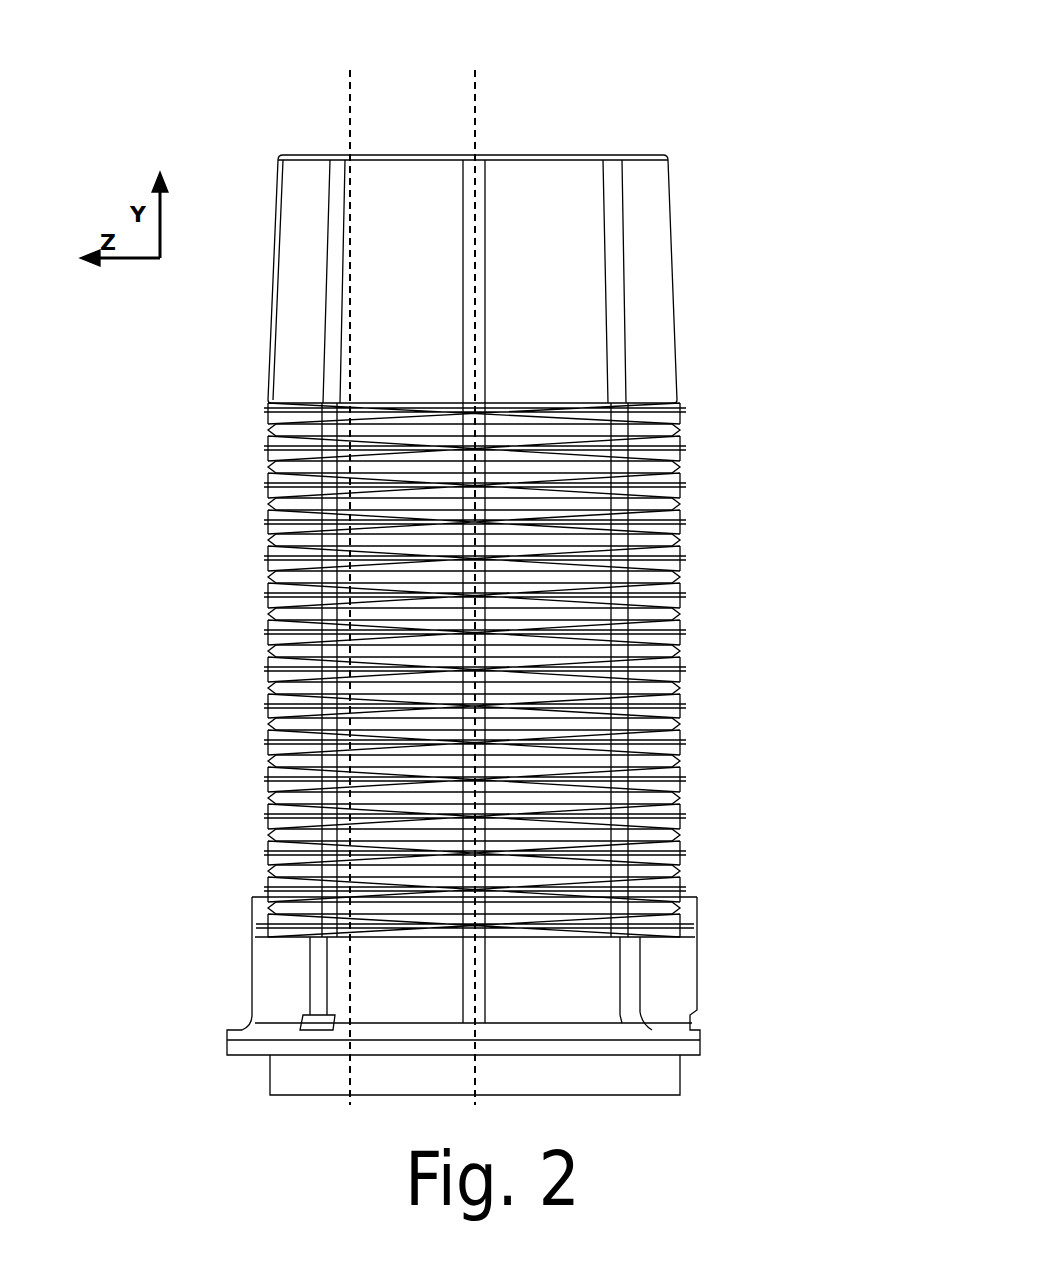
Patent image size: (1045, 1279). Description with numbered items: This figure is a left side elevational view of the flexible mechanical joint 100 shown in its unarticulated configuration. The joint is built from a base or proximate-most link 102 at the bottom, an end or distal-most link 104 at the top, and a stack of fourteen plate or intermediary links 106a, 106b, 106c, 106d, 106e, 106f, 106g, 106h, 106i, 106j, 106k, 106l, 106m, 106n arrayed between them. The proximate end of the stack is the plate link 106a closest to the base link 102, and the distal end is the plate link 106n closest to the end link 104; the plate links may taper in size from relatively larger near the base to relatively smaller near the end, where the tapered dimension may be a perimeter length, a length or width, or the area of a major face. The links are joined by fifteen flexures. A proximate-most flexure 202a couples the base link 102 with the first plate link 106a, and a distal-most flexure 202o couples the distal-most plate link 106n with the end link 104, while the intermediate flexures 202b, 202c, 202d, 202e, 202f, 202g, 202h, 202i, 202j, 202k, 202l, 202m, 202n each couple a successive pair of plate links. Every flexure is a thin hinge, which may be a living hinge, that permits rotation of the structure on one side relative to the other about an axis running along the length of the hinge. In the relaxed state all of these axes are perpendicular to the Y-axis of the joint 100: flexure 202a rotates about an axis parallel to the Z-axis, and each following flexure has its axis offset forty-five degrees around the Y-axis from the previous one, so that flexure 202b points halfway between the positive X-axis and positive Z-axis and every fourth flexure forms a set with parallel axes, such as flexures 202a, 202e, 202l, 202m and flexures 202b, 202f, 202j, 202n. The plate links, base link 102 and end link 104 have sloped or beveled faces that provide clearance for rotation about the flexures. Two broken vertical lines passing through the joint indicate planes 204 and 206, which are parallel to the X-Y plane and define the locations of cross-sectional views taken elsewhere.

The flexible mechanical joint 100 is at (170, 42).
The base or proximate-most link 102 is at (697, 998).
The end or distal-most link 104 is at (668, 285).
The plate or intermediary link 106a is at (690, 906).
The plate or intermediary link 106b is at (270, 871).
The plate or intermediary link 106c is at (680, 835).
The plate or intermediary link 106d is at (270, 798).
The plate or intermediary link 106e is at (680, 761).
The plate or intermediary link 106f is at (270, 724).
The plate or intermediary link 106g is at (680, 688).
The plate or intermediary link 106h is at (270, 651).
The plate or intermediary link 106i is at (680, 614).
The plate or intermediary link 106j is at (270, 577).
The plate or intermediary link 106k is at (680, 540).
The plate or intermediary link 106l is at (270, 504).
The plate or intermediary link 106m is at (680, 467).
The plate or intermediary link 106n is at (270, 430).
The proximate-most flexure 202a is at (640, 922).
The intermediate flexure 202b is at (268, 888).
The intermediate flexure 202c is at (640, 852).
The intermediate flexure 202d is at (268, 816).
The intermediate flexure 202e is at (640, 778).
The intermediate flexure 202f is at (268, 742).
The intermediate flexure 202g is at (640, 706).
The intermediate flexure 202h is at (268, 670).
The intermediate flexure 202i is at (640, 632).
The intermediate flexure 202j is at (268, 596).
The intermediate flexure 202k is at (640, 559).
The intermediate flexure 202l is at (268, 521).
The intermediate flexure 202m is at (640, 483).
The intermediate flexure 202n is at (268, 447).
The distal-most flexure 202o is at (640, 411).
The plane 204 is at (475, 118).
The plane 206 is at (350, 118).